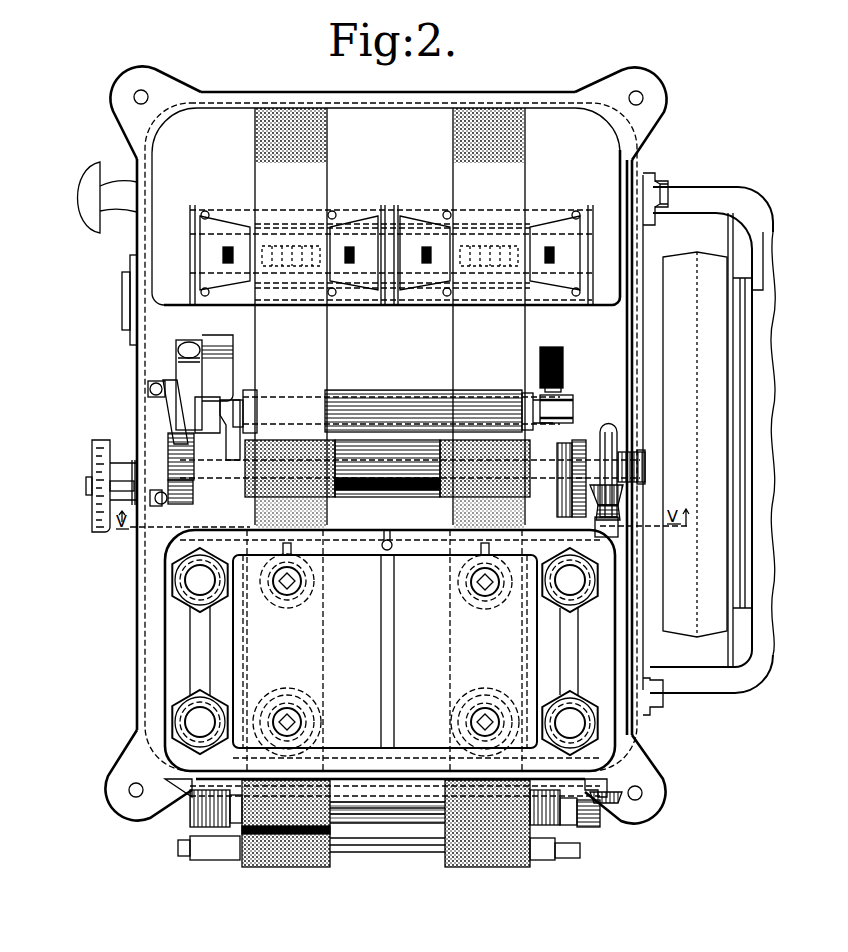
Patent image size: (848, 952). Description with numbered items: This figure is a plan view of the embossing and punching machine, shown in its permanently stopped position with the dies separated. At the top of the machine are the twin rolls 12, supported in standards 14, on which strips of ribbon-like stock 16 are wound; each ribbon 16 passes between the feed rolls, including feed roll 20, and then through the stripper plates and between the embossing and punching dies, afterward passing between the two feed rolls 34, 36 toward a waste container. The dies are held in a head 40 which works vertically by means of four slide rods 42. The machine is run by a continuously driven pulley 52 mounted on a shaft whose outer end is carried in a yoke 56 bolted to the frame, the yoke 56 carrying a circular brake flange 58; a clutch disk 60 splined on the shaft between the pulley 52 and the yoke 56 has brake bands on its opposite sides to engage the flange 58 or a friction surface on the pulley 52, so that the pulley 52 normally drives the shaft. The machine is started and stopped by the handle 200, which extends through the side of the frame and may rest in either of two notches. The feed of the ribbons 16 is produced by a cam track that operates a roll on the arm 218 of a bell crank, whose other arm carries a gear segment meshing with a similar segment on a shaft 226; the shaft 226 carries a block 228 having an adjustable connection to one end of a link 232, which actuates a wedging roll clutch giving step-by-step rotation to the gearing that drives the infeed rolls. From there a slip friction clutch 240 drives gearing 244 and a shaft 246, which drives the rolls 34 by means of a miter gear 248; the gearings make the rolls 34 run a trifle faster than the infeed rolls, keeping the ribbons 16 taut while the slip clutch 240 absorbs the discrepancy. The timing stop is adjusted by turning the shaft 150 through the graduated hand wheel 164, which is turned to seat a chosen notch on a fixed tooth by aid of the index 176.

The twin rolls 12 is at (452, 173).
The standards 14 is at (215, 247).
The ribbon 16 is at (453, 512).
The feed roll 20 is at (463, 457).
The feed rolls 34 is at (445, 828).
The feed roll 36 is at (487, 867).
The head 40 is at (562, 655).
The slide rods 42 is at (196, 581).
The pulley 52 is at (678, 630).
The yoke 56 is at (733, 668).
The brake flange 58 is at (753, 290).
The clutch disk 60 is at (735, 280).
The shaft 150 is at (87, 487).
The hand wheel 164 is at (92, 463).
The index 176 is at (122, 482).
The handle 200 is at (89, 214).
The arm 218 is at (563, 377).
The shaft 226 is at (216, 362).
The block 228 is at (189, 345).
The link 232 is at (166, 416).
The slip friction clutch 240 is at (610, 404).
The gearing 244 is at (602, 500).
The shaft 246 is at (623, 510).
The miter gear 248 is at (594, 826).